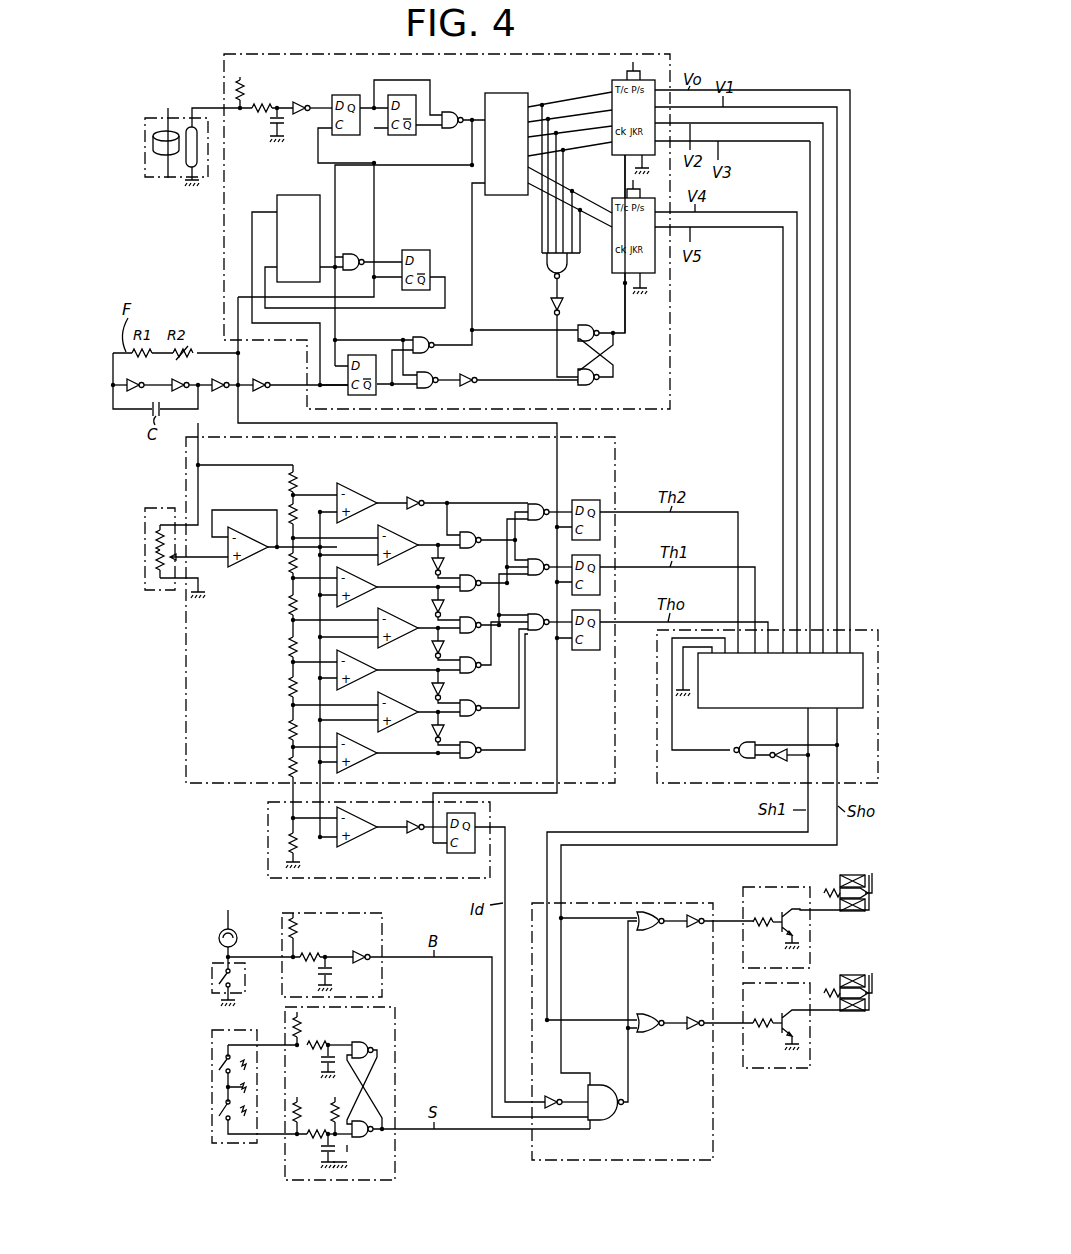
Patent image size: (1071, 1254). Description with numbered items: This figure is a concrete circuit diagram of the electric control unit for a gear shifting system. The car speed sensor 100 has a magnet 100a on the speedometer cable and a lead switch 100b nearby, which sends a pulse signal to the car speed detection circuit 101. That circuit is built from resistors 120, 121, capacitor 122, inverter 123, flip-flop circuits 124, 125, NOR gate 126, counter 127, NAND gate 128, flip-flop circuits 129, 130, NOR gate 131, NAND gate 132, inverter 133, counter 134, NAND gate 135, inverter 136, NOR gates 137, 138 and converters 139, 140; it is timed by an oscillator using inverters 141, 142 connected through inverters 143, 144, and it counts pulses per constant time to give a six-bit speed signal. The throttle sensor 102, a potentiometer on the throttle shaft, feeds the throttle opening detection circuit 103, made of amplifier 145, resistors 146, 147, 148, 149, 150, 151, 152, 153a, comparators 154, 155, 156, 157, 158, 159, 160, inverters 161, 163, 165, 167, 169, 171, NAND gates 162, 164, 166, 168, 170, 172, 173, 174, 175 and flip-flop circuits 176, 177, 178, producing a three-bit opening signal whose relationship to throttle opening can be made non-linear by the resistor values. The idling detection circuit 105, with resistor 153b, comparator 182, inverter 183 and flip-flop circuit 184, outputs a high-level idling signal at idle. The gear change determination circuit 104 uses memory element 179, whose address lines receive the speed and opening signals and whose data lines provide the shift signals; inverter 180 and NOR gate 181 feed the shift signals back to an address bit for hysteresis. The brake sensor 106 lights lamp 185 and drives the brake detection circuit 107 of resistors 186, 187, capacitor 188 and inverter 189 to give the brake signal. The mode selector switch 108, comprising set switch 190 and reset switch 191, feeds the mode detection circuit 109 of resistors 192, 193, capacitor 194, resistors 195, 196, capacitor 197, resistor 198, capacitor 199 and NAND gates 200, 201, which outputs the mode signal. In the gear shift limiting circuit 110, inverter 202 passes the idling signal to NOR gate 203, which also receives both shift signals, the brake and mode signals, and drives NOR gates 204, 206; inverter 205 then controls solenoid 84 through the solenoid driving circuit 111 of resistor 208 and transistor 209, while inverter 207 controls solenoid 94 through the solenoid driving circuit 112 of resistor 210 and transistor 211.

The solenoid 84 is at (853, 884).
The solenoid 94 is at (853, 985).
The car speed sensor 100 is at (153, 112).
The magnet 100a is at (158, 150).
The lead switch 100b is at (189, 167).
The car speed detection circuit 101 is at (222, 87).
The throttle sensor 102 is at (152, 508).
The throttle opening detection circuit 103 is at (183, 468).
The gear change determination circuit 104 is at (653, 690).
The idling detection circuit 105 is at (266, 831).
The brake sensor 106 is at (210, 973).
The brake detection circuit 107 is at (280, 930).
The mode selector switch 108 is at (210, 1043).
The mode detection circuit 109 is at (283, 1036).
The gear shift limiting circuit 110 is at (666, 901).
The solenoid driving circuit 111 is at (760, 884).
The solenoid driving circuit 112 is at (741, 1012).
The resistor 120 is at (255, 86).
The resistor 121 is at (267, 95).
The capacitor 122 is at (270, 120).
The inverter 123 is at (311, 96).
The flip-flop circuit 124 is at (346, 95).
The flip-flop circuit 125 is at (340, 196).
The NOR gate 126 is at (450, 112).
The counter 127 is at (300, 195).
The NAND gate 128 is at (350, 256).
The flip-flop circuit 129 is at (416, 250).
The flip-flop circuit 130 is at (370, 392).
The NOR gate 131 is at (455, 279).
The NAND gate 132 is at (438, 372).
The inverter 133 is at (470, 379).
The counter 134 is at (501, 195).
The NAND gate 135 is at (546, 266).
The inverter 136 is at (550, 306).
The NOR gate 137 is at (590, 328).
The NOR gate 138 is at (598, 386).
The converter 139 is at (612, 86).
The converter 140 is at (629, 244).
The inverter 141 is at (138, 375).
The inverter 142 is at (182, 375).
The inverter 143 is at (220, 392).
The inverter 144 is at (260, 392).
The amplifier 145 is at (250, 560).
The resistor 146 is at (297, 478).
The resistor 147 is at (290, 512).
The resistor 148 is at (289, 565).
The resistor 149 is at (289, 604).
The resistor 150 is at (289, 645).
The resistor 151 is at (289, 686).
The resistor 152 is at (289, 728).
The resistor 153a is at (289, 767).
The resistor 153b is at (299, 845).
The comparator 154 is at (362, 498).
The comparator 155 is at (404, 545).
The comparator 156 is at (365, 590).
The comparator 157 is at (378, 620).
The comparator 158 is at (358, 672).
The comparator 159 is at (378, 704).
The comparator 160 is at (358, 752).
The inverter 161 is at (414, 502).
The NAND gate 162 is at (492, 536).
The inverter 163 is at (432, 566).
The NAND gate 164 is at (492, 555).
The inverter 165 is at (432, 606).
The NAND gate 166 is at (491, 603).
The inverter 167 is at (432, 648).
The NAND gate 168 is at (492, 647).
The inverter 169 is at (432, 689).
The NAND gate 170 is at (491, 672).
The inverter 171 is at (432, 732).
The NAND gate 172 is at (492, 696).
The NAND gate 173 is at (538, 504).
The NAND gate 174 is at (538, 559).
The NAND gate 175 is at (540, 609).
The flip-flop circuit 176 is at (584, 500).
The flip-flop circuit 177 is at (600, 563).
The flip-flop circuit 178 is at (590, 652).
The memory element 179 is at (724, 708).
The inverter 180 is at (775, 765).
The NOR gate 181 is at (785, 740).
The comparator 182 is at (360, 840).
The inverter 183 is at (422, 842).
The flip-flop circuit 184 is at (452, 855).
The lamp 185 is at (219, 940).
The resistor 186 is at (297, 932).
The resistor 187 is at (309, 963).
The capacitor 188 is at (331, 970).
The inverter 189 is at (358, 951).
The set switch 190 is at (222, 1068).
The reset switch 191 is at (222, 1112).
The resistor 192 is at (300, 1024).
The resistor 193 is at (332, 1044).
The capacitor 194 is at (322, 1058).
The resistor 195 is at (320, 1116).
The resistor 196 is at (310, 1138).
The capacitor 197 is at (322, 1158).
The resistor 198 is at (312, 1098).
The capacitor 199 is at (347, 1152).
The NAND gate 200 is at (367, 1042).
The NAND gate 201 is at (370, 1137).
The inverter 202 is at (554, 1110).
The NOR gate 203 is at (604, 1120).
The NOR gate 204 is at (652, 932).
The inverter 205 is at (692, 930).
The NOR gate 206 is at (655, 1013).
The inverter 207 is at (693, 1013).
The resistor 208 is at (763, 930).
The transistor 209 is at (778, 916).
The resistor 210 is at (763, 1030).
The transistor 211 is at (781, 1010).